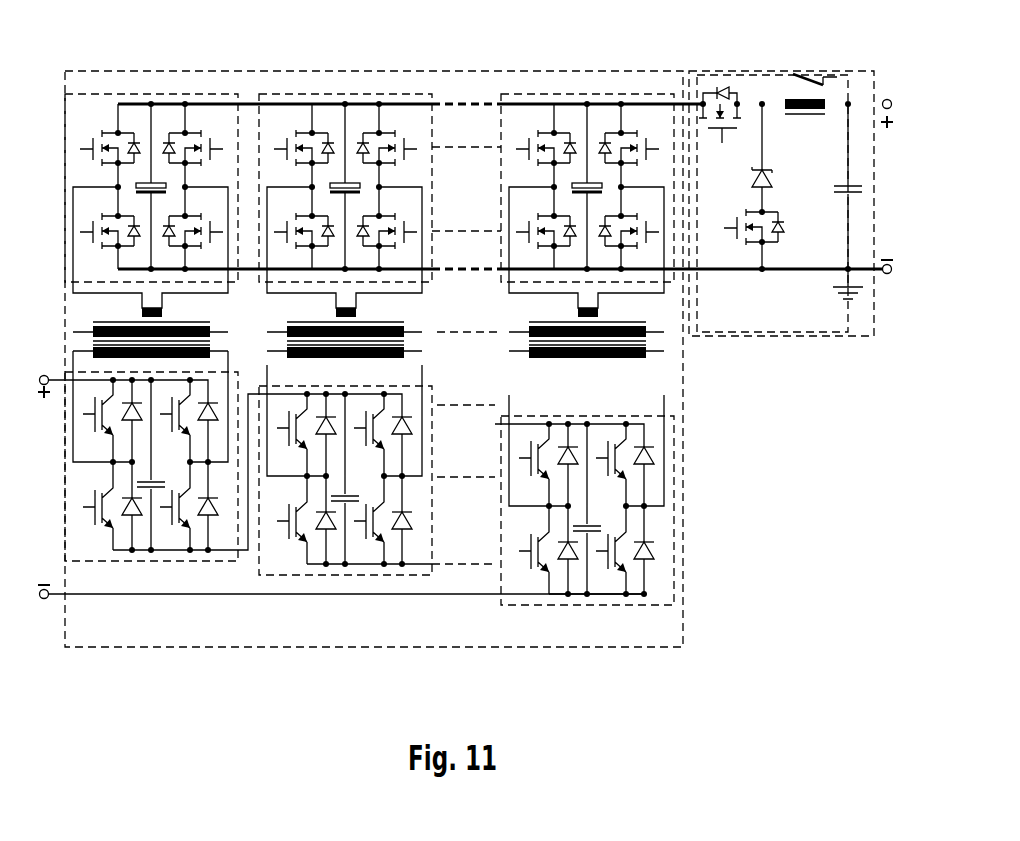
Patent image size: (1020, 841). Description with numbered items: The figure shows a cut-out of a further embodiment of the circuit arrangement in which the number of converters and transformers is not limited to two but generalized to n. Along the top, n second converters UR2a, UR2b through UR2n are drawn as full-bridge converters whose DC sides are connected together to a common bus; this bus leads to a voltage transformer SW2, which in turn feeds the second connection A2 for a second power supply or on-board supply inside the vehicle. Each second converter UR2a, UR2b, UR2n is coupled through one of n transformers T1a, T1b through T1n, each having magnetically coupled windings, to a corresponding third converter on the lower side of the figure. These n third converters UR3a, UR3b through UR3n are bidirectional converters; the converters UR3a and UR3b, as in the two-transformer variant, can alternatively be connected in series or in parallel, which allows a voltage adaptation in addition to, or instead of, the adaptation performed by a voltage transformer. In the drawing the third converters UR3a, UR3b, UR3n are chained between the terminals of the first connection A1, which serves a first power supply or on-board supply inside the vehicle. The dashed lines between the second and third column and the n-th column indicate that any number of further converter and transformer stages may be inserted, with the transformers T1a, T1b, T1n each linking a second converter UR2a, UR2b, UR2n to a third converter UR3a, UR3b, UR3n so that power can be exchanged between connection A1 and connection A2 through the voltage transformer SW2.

The second converter UR2a is at (185, 102).
The second converter UR2b is at (405, 95).
The second converter UR2n is at (570, 95).
The transformer T1a is at (217, 323).
The transformer T1b is at (410, 323).
The transformer T1n is at (665, 343).
The bidirectional converter UR3a is at (165, 561).
The bidirectional converter UR3b is at (303, 575).
The third converter UR3n is at (665, 575).
The voltage transformer SW2 is at (767, 71).
The first connection A1 is at (42, 487).
The second connection A2 is at (895, 187).